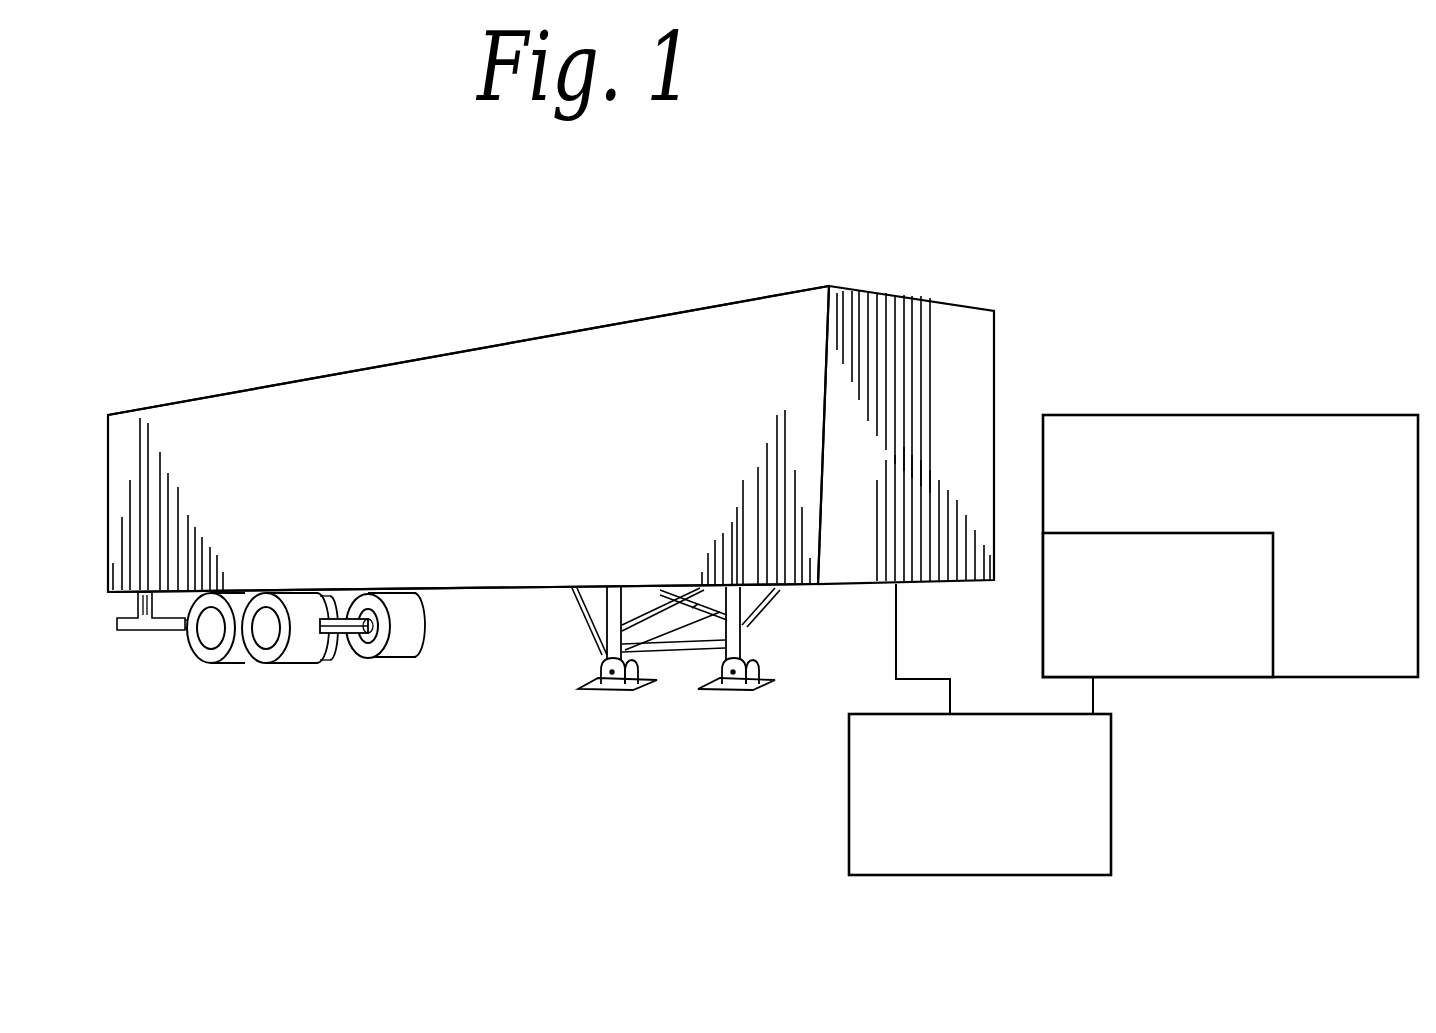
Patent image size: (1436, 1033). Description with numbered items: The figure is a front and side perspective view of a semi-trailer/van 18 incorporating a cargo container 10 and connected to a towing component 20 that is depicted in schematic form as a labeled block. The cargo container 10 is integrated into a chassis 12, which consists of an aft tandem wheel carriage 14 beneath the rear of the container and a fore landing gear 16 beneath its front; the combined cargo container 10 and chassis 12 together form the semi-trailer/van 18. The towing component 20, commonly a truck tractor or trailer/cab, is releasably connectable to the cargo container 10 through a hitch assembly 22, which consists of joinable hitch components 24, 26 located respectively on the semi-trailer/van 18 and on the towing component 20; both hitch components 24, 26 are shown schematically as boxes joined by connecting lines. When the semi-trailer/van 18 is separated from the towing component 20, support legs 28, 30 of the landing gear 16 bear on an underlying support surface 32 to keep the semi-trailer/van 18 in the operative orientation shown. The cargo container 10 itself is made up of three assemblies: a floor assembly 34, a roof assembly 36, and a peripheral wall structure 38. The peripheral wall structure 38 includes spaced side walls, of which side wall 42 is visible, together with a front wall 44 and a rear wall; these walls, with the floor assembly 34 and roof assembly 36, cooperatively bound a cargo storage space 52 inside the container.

The cargo container 10 is at (980, 256).
The chassis 12 is at (502, 598).
The tandem wheel carriage 14 is at (290, 682).
The landing gear 16 is at (758, 650).
The semi-trailer/van 18 is at (446, 647).
The towing component 20 is at (1298, 543).
The hitch assembly 22 is at (1222, 763).
The hitch component 24 is at (993, 847).
The hitch component 26 is at (1132, 652).
The support leg 28 is at (730, 694).
The support leg 30 is at (630, 693).
The support surface 32 is at (510, 709).
The floor assembly 34 is at (428, 602).
The roof assembly 36 is at (629, 312).
The peripheral wall structure 38 is at (978, 391).
The side wall 42 is at (502, 487).
The front wall 44 is at (924, 447).
The cargo storage space 52 is at (861, 386).